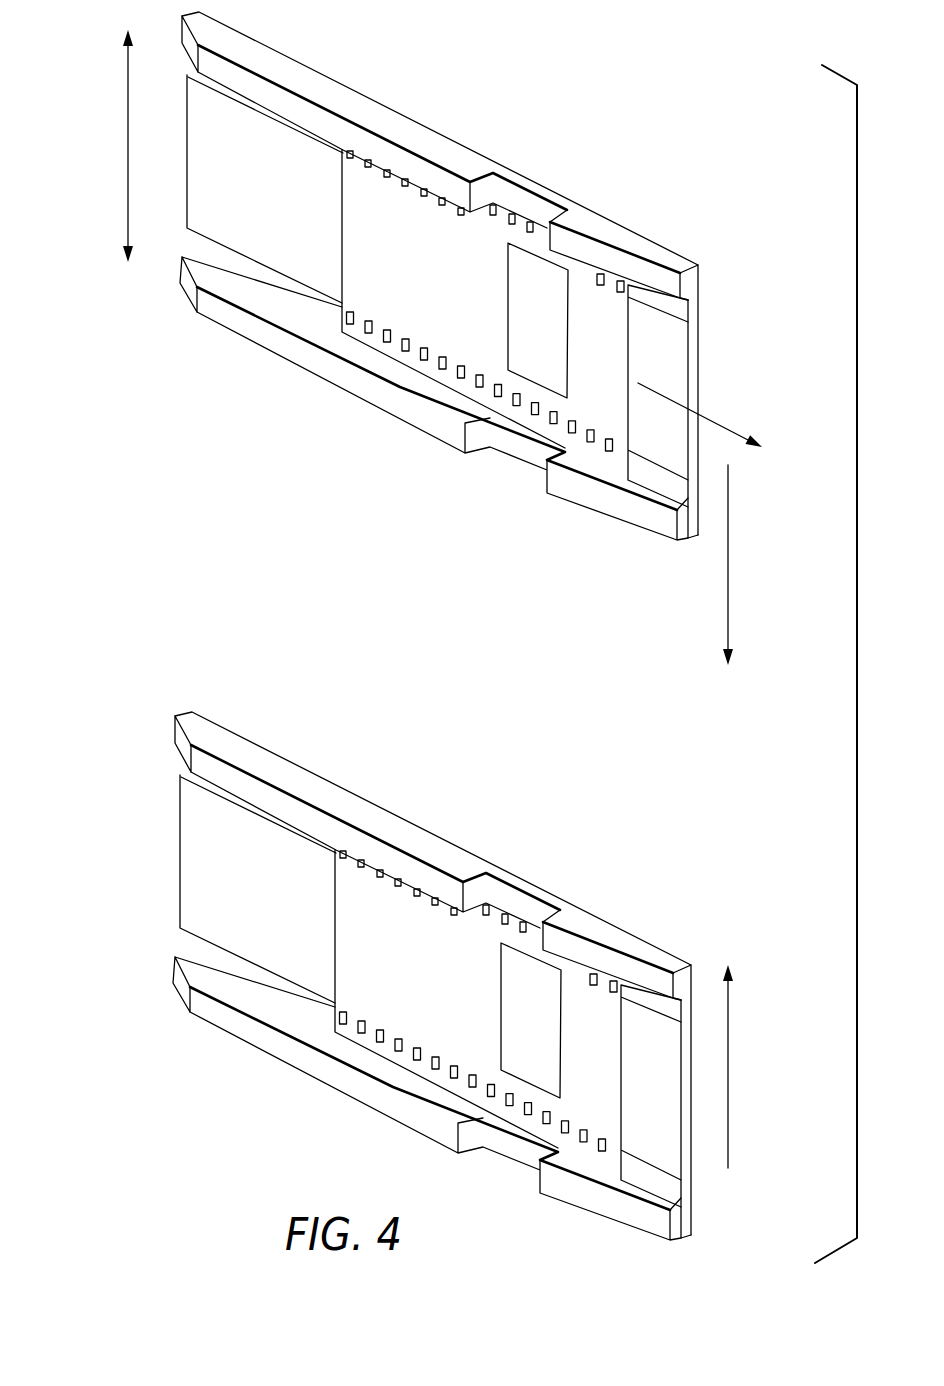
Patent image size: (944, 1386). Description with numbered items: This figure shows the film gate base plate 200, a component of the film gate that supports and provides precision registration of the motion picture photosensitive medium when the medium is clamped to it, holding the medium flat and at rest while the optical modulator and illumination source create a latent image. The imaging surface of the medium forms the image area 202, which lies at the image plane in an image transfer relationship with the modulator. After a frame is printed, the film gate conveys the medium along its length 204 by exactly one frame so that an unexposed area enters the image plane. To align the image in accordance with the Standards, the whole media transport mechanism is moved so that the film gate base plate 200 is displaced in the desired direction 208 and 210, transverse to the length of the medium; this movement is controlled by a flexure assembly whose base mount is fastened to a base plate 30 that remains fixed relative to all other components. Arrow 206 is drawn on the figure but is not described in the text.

The base plate 30 is at (373, 84).
The film gate base plate 200 is at (599, 226).
The image area 202 is at (524, 303).
The direction along the length of the medium 204 is at (731, 422).
The vertical travel double arrow 206 is at (118, 140).
The desired direction 208 is at (729, 567).
The desired direction 210 is at (729, 1033).